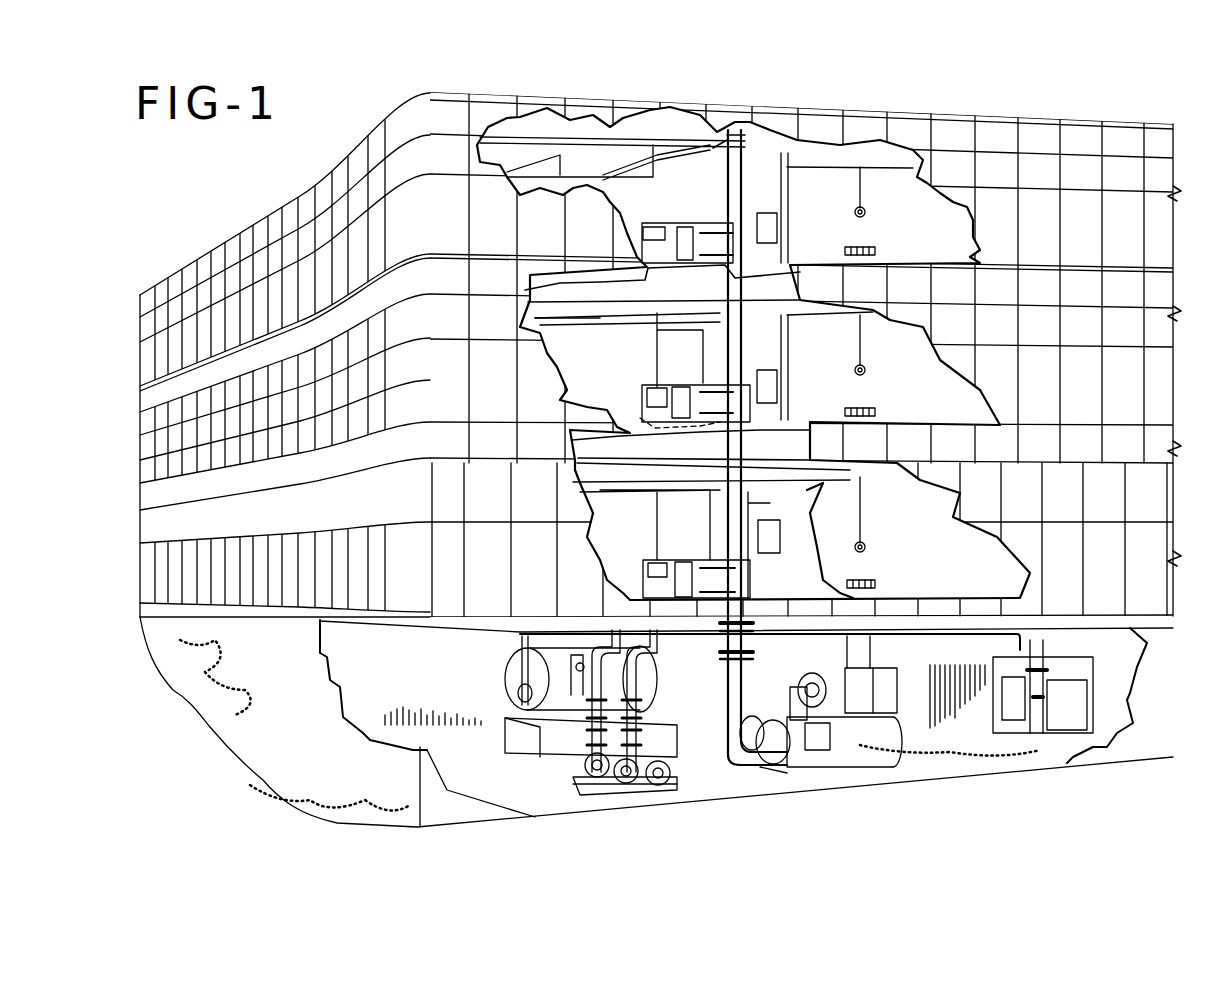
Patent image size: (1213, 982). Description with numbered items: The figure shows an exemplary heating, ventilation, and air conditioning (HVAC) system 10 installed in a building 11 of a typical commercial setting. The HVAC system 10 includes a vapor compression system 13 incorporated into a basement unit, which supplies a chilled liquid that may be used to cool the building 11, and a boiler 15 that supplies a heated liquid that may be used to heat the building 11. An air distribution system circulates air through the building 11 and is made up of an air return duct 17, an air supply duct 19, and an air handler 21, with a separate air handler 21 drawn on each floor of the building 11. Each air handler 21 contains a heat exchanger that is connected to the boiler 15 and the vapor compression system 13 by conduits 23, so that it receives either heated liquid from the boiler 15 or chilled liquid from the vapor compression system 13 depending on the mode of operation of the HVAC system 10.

The heating, ventilation, and air conditioning (HVAC) system 10 is at (943, 792).
The building 11 is at (1043, 122).
The vapor compression system 13 is at (850, 742).
The boiler 15 is at (503, 680).
The air return duct 17 is at (647, 423).
The air supply duct 19 is at (727, 140).
The air handler 21 is at (683, 380).
The conduits 23 is at (733, 597).